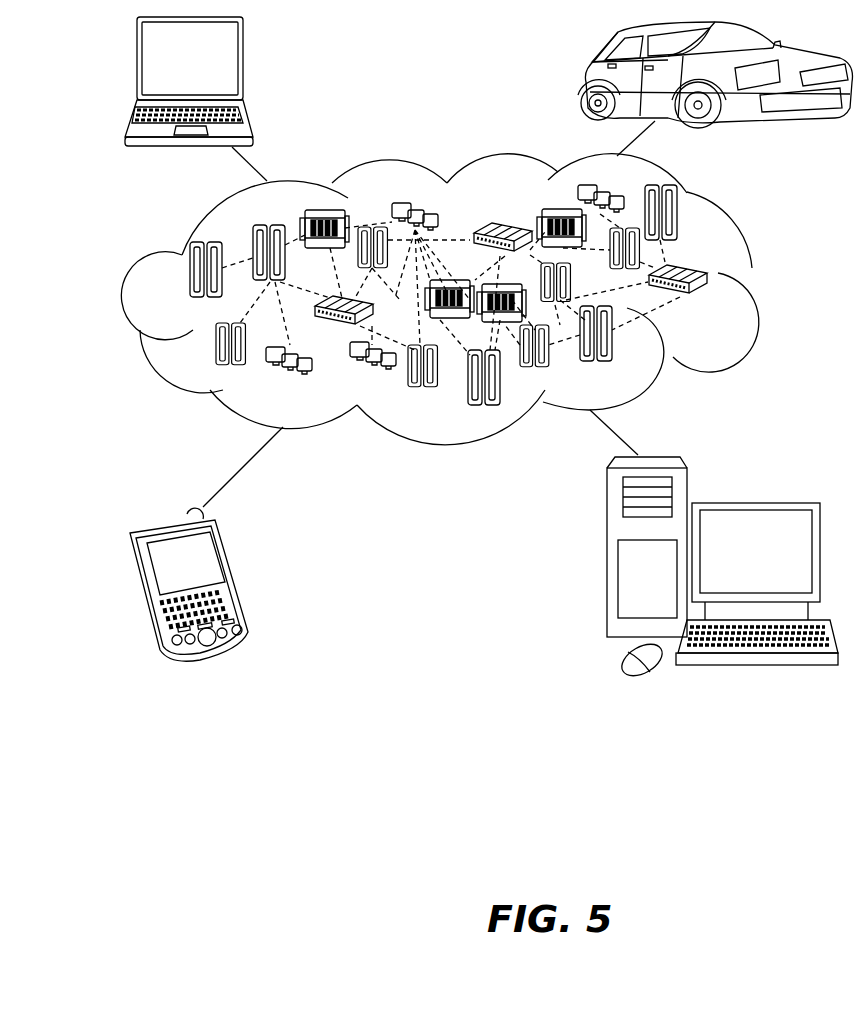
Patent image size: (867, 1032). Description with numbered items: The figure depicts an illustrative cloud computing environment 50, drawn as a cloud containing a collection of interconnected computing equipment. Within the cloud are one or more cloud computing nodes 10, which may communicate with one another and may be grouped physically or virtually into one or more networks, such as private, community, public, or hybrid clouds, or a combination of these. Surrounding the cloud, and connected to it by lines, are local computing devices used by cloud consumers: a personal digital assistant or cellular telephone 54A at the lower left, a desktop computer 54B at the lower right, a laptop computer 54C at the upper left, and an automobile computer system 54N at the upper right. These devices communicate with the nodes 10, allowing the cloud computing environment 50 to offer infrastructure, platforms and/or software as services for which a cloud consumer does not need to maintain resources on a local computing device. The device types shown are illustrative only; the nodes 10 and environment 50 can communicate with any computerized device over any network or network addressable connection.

The cloud computing node 10 is at (714, 310).
The cloud computing environment 50 is at (752, 277).
The personal digital assistant or cellular telephone 54A is at (235, 576).
The desktop computer 54B is at (754, 502).
The laptop computer 54C is at (243, 65).
The automobile computer system 54N is at (585, 79).